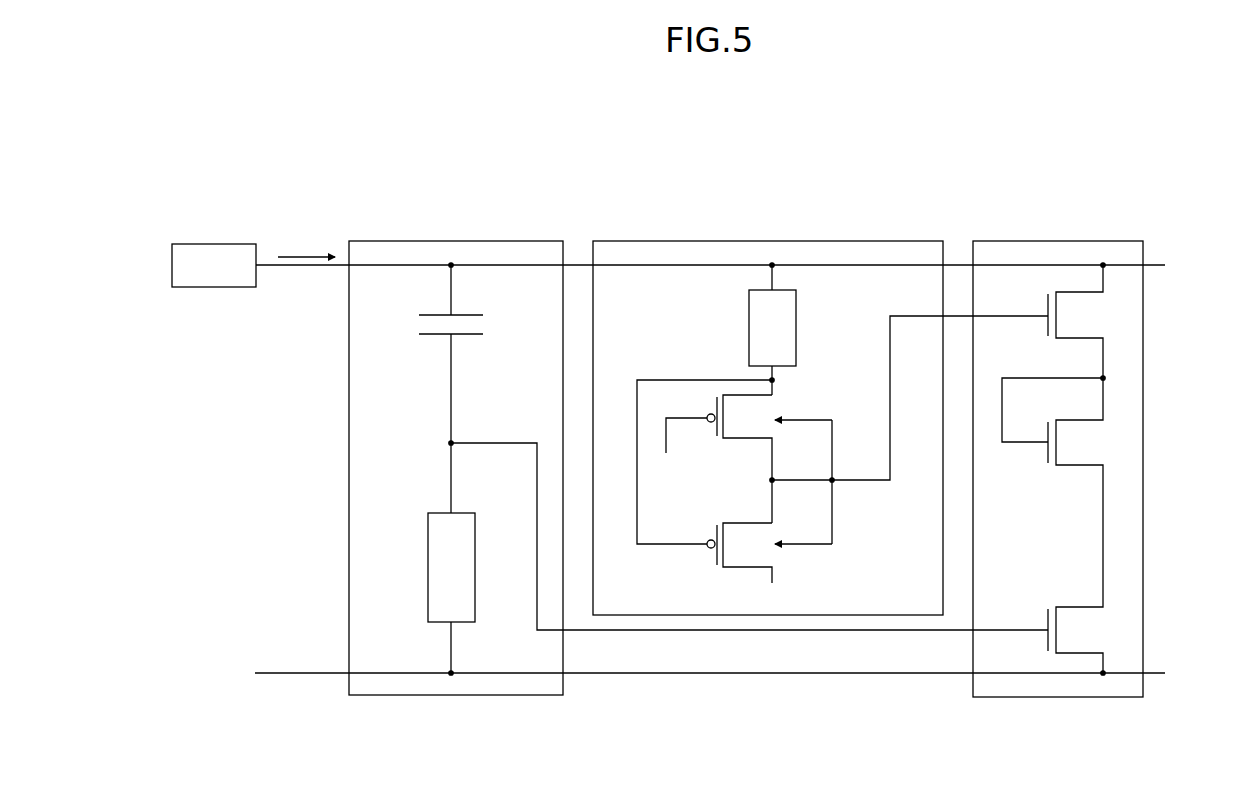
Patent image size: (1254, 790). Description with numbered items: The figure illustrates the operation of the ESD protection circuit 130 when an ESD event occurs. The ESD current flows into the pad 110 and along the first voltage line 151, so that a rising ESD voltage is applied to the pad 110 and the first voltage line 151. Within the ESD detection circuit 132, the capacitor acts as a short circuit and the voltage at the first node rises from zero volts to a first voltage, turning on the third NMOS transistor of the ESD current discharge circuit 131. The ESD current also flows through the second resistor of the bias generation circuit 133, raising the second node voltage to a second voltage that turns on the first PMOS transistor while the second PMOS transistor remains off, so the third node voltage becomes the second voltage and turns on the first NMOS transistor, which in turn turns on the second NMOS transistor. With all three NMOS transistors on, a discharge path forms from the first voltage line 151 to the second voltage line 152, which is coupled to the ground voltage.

The pad 110 is at (212, 243).
The ESD protection circuit 130 is at (1106, 152).
The ESD current discharge circuit 131 is at (1073, 238).
The ESD detection circuit 132 is at (513, 240).
The bias generation circuit 133 is at (883, 238).
The first voltage line 151 is at (282, 268).
The second voltage line 152 is at (283, 681).